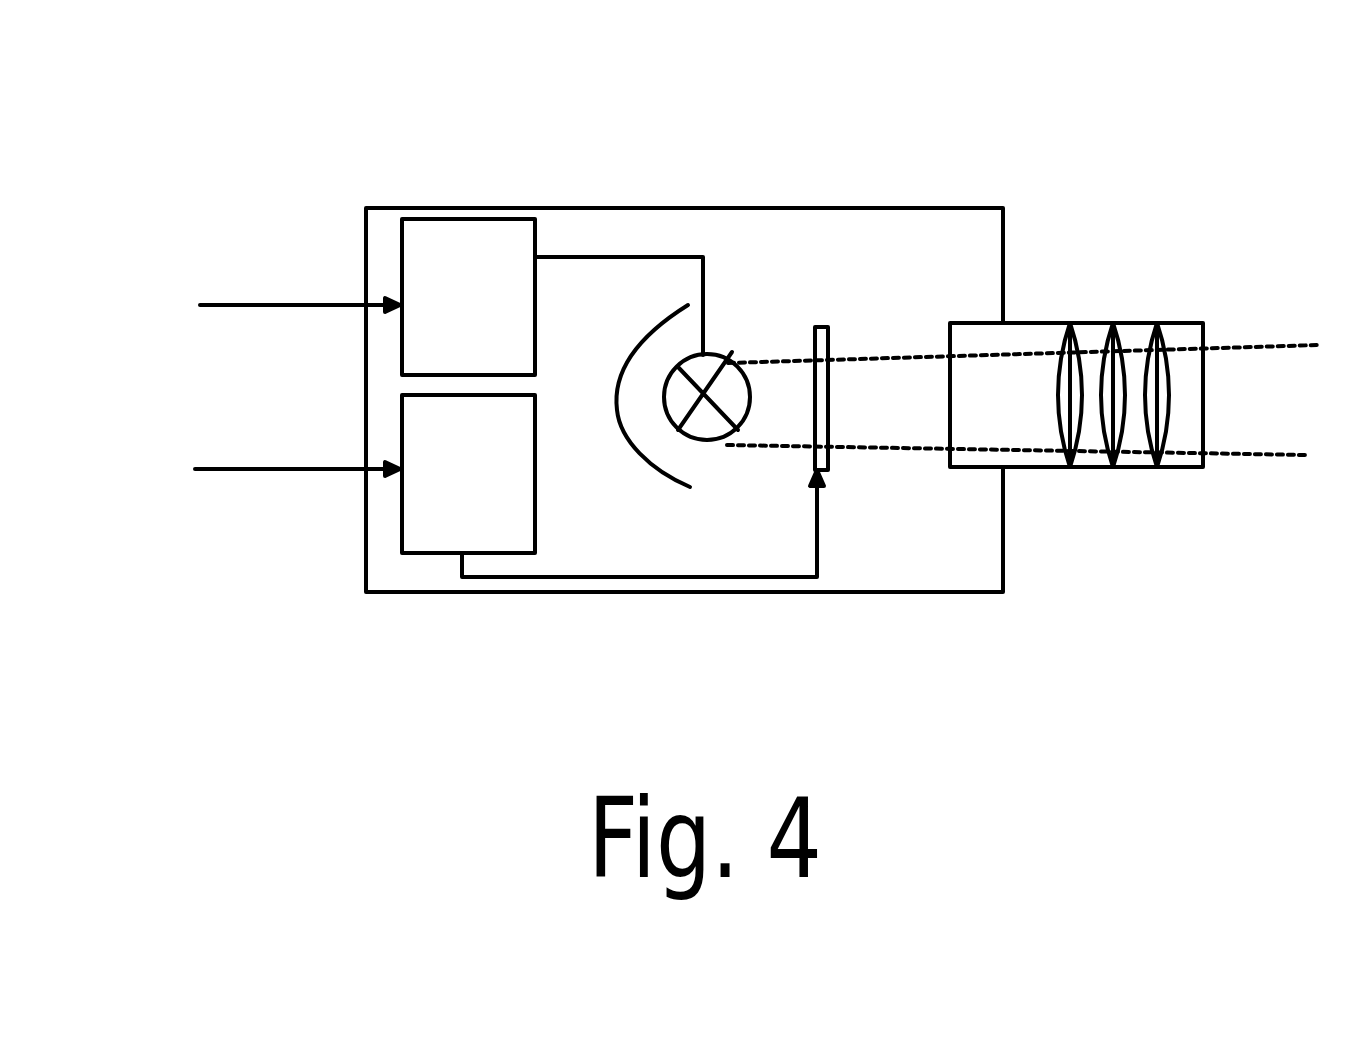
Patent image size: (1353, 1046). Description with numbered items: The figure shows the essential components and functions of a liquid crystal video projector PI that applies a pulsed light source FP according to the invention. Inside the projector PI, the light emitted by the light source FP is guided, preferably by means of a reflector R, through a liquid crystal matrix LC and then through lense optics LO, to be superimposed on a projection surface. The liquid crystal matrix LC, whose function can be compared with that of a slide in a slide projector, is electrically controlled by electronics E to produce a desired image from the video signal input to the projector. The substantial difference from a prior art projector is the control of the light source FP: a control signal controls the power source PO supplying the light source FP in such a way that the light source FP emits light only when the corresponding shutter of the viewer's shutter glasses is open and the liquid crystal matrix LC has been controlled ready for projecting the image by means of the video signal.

The liquid crystal video projector PI is at (305, 152).
The power source PO is at (468, 297).
The electronics E is at (468, 474).
The pulsed light source FP is at (717, 365).
The reflector R is at (655, 465).
The liquid crystal matrix LC is at (830, 352).
The lense optics LO is at (1100, 322).